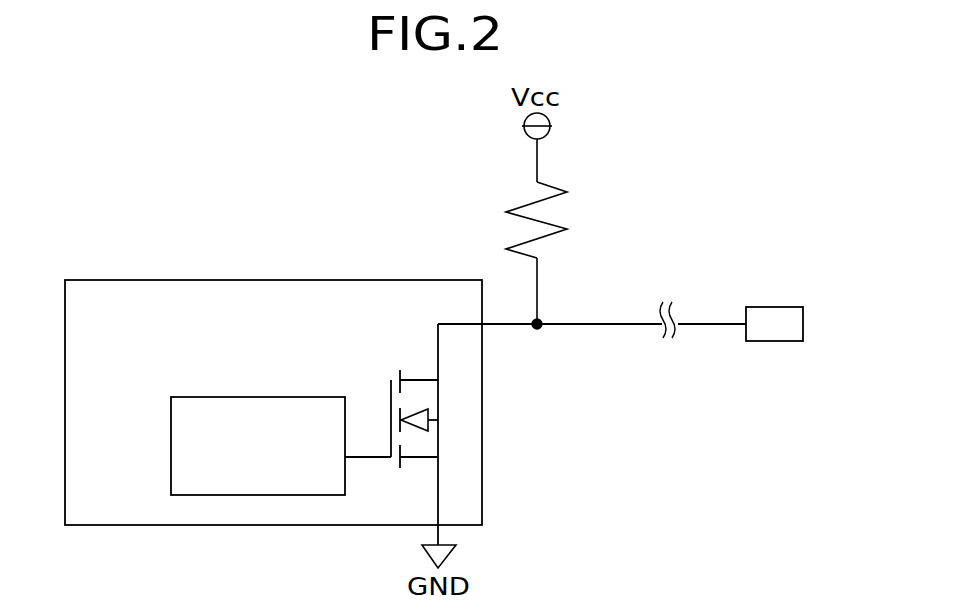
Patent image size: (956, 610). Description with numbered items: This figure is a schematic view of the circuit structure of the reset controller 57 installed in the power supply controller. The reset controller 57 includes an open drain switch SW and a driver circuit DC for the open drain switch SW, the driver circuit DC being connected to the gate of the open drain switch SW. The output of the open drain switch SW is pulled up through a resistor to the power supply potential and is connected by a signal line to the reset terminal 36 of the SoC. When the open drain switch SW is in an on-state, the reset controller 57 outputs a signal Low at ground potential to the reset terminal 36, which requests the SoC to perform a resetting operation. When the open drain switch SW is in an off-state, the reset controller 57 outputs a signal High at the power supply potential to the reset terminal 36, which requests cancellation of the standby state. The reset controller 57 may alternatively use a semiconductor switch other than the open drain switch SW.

The reset controller 57 is at (272, 280).
The reset terminal 36 is at (775, 342).
The driver circuit DC is at (250, 496).
The open drain switch SW is at (457, 423).